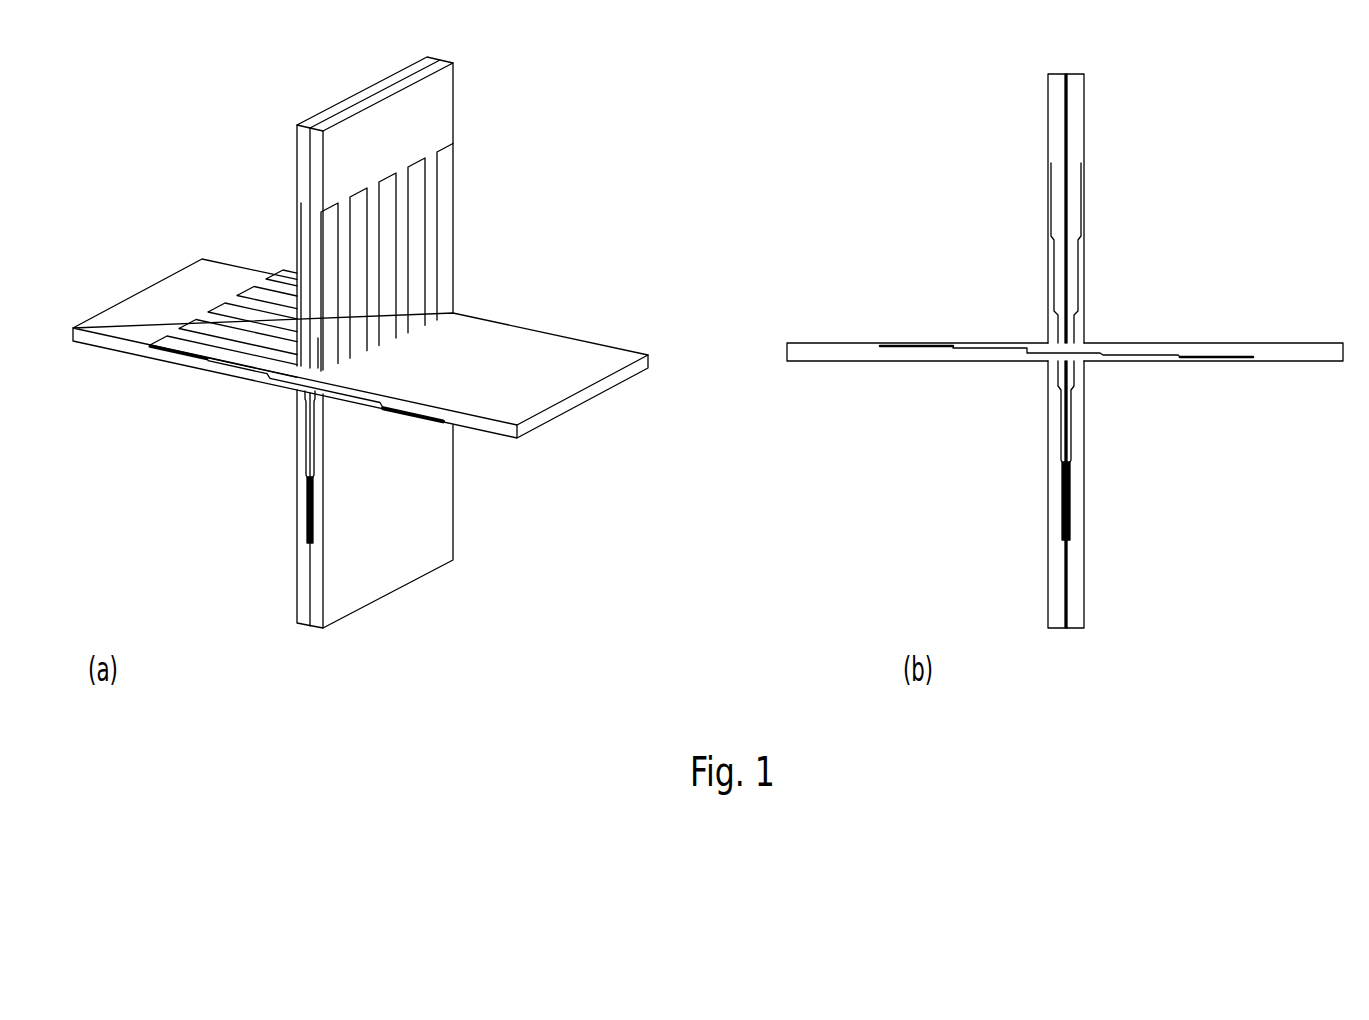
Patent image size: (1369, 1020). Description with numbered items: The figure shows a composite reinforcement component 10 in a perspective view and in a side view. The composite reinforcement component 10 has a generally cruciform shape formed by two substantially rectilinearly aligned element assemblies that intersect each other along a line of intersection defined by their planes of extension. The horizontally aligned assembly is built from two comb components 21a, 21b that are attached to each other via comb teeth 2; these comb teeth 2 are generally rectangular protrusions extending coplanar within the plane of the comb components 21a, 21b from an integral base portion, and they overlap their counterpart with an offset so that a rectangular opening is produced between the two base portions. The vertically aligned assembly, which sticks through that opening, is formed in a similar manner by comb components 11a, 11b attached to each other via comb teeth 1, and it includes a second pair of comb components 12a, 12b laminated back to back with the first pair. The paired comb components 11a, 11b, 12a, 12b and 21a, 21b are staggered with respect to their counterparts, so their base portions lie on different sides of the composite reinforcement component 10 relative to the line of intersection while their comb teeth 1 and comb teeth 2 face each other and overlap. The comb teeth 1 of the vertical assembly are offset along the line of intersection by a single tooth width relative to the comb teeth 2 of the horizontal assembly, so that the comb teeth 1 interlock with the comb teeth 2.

The comb teeth 1 is at (442, 190).
The comb teeth 2 is at (255, 298).
The composite reinforcement component 10 is at (173, 136).
The comb component 11a is at (1058, 590).
The comb component 11b is at (1058, 102).
The comb component 12a is at (1075, 607).
The comb component 12b is at (1075, 131).
The comb component 21a is at (832, 352).
The comb component 21b is at (1312, 352).